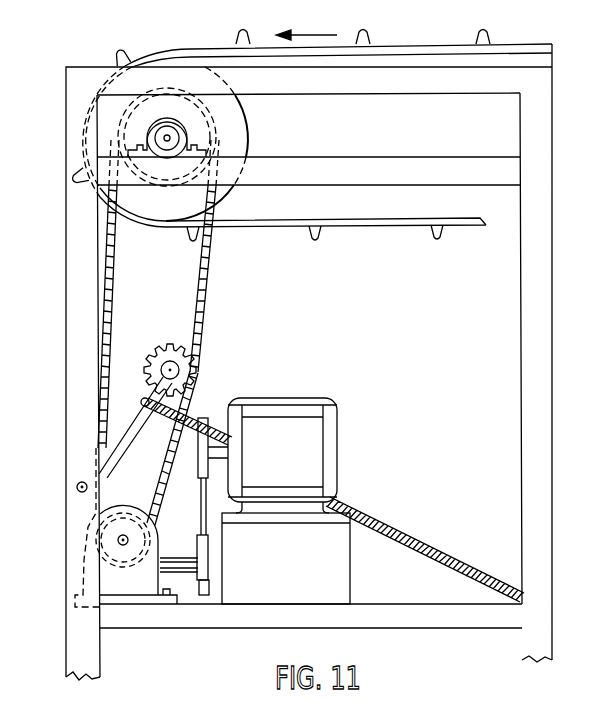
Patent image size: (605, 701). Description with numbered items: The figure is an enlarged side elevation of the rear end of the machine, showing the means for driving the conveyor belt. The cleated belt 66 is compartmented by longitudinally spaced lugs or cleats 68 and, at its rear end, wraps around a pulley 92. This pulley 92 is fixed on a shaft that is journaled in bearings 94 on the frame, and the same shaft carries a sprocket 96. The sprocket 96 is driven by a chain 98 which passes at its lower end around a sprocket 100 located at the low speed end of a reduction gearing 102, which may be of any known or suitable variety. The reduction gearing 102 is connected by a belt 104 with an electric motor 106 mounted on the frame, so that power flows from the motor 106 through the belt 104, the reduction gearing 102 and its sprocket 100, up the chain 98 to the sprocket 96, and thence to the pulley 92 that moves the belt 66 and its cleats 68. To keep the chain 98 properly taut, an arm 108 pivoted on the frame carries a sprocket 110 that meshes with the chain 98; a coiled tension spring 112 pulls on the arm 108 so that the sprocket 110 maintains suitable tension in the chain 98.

The cleated belt 66 is at (194, 52).
The lugs or cleats 68 is at (240, 43).
The pulley 92 is at (235, 137).
The bearings 94 is at (173, 133).
The sprocket 96 is at (239, 162).
The chain 98 is at (207, 288).
The sprocket 100 is at (128, 527).
The reduction gearing 102 is at (108, 582).
The belt 104 is at (204, 522).
The electric motor 106 is at (313, 460).
The arm 108 is at (132, 420).
The sprocket 110 is at (163, 350).
The coiled tension spring 112 is at (398, 533).